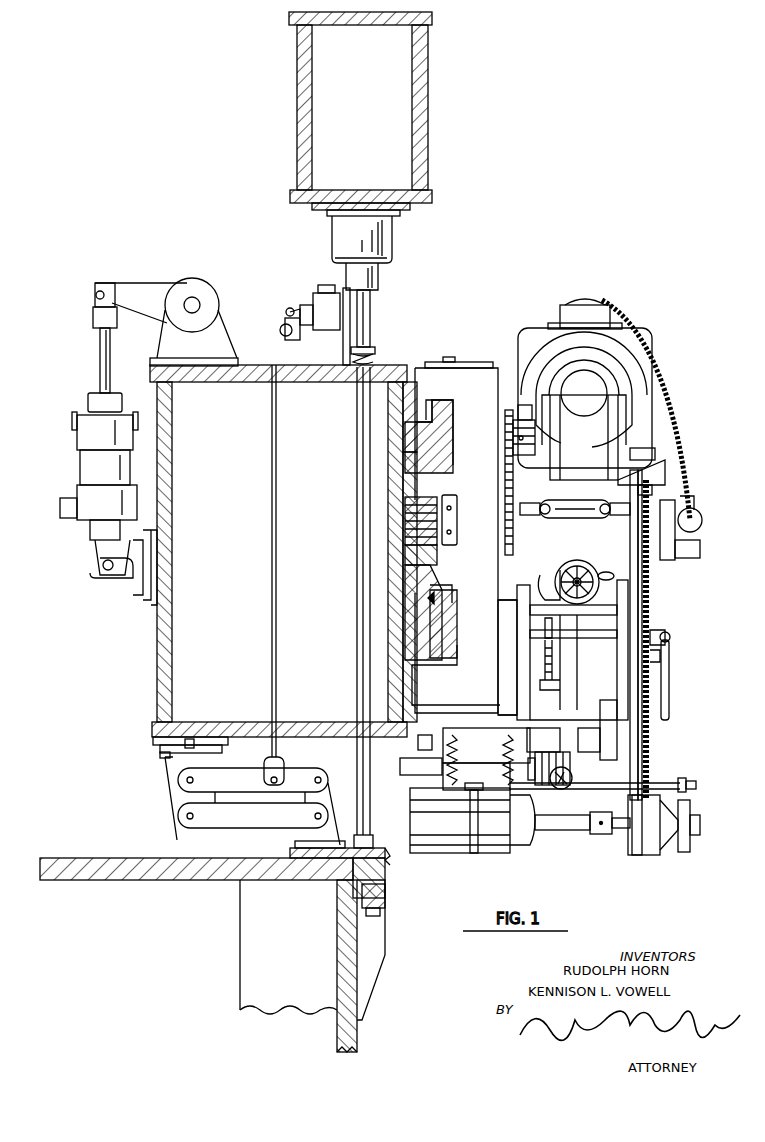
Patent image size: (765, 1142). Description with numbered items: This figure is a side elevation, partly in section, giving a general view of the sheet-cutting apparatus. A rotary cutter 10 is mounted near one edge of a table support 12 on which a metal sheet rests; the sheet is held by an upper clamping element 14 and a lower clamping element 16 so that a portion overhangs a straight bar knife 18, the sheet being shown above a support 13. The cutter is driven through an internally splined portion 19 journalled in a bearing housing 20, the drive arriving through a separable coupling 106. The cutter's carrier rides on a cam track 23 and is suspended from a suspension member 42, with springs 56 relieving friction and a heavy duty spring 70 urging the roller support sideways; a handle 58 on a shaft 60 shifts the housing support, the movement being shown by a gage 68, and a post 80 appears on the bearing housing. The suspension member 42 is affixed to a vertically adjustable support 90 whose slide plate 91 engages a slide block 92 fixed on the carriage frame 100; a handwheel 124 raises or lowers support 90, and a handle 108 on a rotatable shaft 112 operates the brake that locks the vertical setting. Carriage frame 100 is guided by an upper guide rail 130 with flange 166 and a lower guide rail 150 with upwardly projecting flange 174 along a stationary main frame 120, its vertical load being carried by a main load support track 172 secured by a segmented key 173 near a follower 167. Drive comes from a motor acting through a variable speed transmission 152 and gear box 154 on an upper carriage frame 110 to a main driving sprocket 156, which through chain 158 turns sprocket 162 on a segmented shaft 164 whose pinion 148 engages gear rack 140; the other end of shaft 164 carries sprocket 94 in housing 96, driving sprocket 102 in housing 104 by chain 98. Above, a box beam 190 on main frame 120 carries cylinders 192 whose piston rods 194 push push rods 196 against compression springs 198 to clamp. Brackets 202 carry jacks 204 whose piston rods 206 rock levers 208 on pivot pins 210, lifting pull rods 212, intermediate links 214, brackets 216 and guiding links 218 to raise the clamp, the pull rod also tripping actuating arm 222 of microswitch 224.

The rotary cutter 10 is at (392, 860).
The table support 12 is at (130, 858).
The column 13 is at (358, 1040).
The upper clamping element 14 is at (290, 852).
The lower clamping element 16 is at (350, 878).
The straight bar knife 18 is at (388, 870).
The internally splined portion 19 is at (555, 832).
The bearing housing 20 is at (460, 845).
The cam track 23 is at (404, 766).
The suspension member 42 is at (462, 728).
The springs 56 is at (505, 764).
The handle 58 is at (688, 784).
The shaft 60 is at (610, 789).
The gage 68 is at (566, 789).
The heavy duty spring 70 is at (536, 757).
The post 80 is at (480, 845).
The vertically adjustable support 90 is at (642, 598).
The slide plate 91 is at (520, 607).
The slide block 92 is at (508, 590).
The sprocket 94 is at (678, 548).
The housing 96 is at (687, 538).
The chain 98 is at (652, 630).
The carriage frame 100 is at (468, 367).
The sprocket 102 is at (630, 836).
The housing 104 is at (688, 842).
The separable coupling 106 is at (608, 834).
The handle 108 is at (668, 666).
The upper carriage frame 110 is at (650, 463).
The rotatable shaft 112 is at (596, 640).
The stationary main frame 120 is at (403, 377).
The handwheel 124 is at (582, 566).
The upper guide rail 130 is at (450, 428).
The gear rack 140 is at (438, 558).
The pinion 148 is at (418, 510).
The lower guide rail 150 is at (445, 648).
The variable speed transmission 152 is at (630, 330).
The gear box 154 is at (610, 393).
The main driving sprocket 156 is at (525, 420).
The chain 158 is at (515, 473).
The sprocket 162 is at (525, 528).
The segmented shaft 164 is at (560, 518).
The flange 166 is at (423, 420).
The cam follower 167 is at (438, 586).
The main load support track 172 is at (448, 598).
The segmented key 173 is at (438, 608).
The upwardly projecting flange 174 is at (416, 650).
The box beam 190 is at (432, 95).
The pneumatic or hydraulic cylinder 192 is at (390, 242).
The piston rod 194 is at (370, 306).
The push rod 196 is at (355, 405).
The compression spring 198 is at (372, 358).
The bracket 202 is at (115, 576).
The pneumatic or hydraulic jack 204 is at (77, 462).
The piston rod 206 is at (100, 356).
The rocking lever 208 is at (155, 282).
The pivot pin 210 is at (195, 300).
The pull rod 212 is at (270, 475).
The intermediate link 214 is at (282, 767).
The bracket 216 is at (323, 800).
The guiding link 218 is at (230, 830).
The actuating arm 222 is at (284, 316).
The microswitch 224 is at (322, 293).